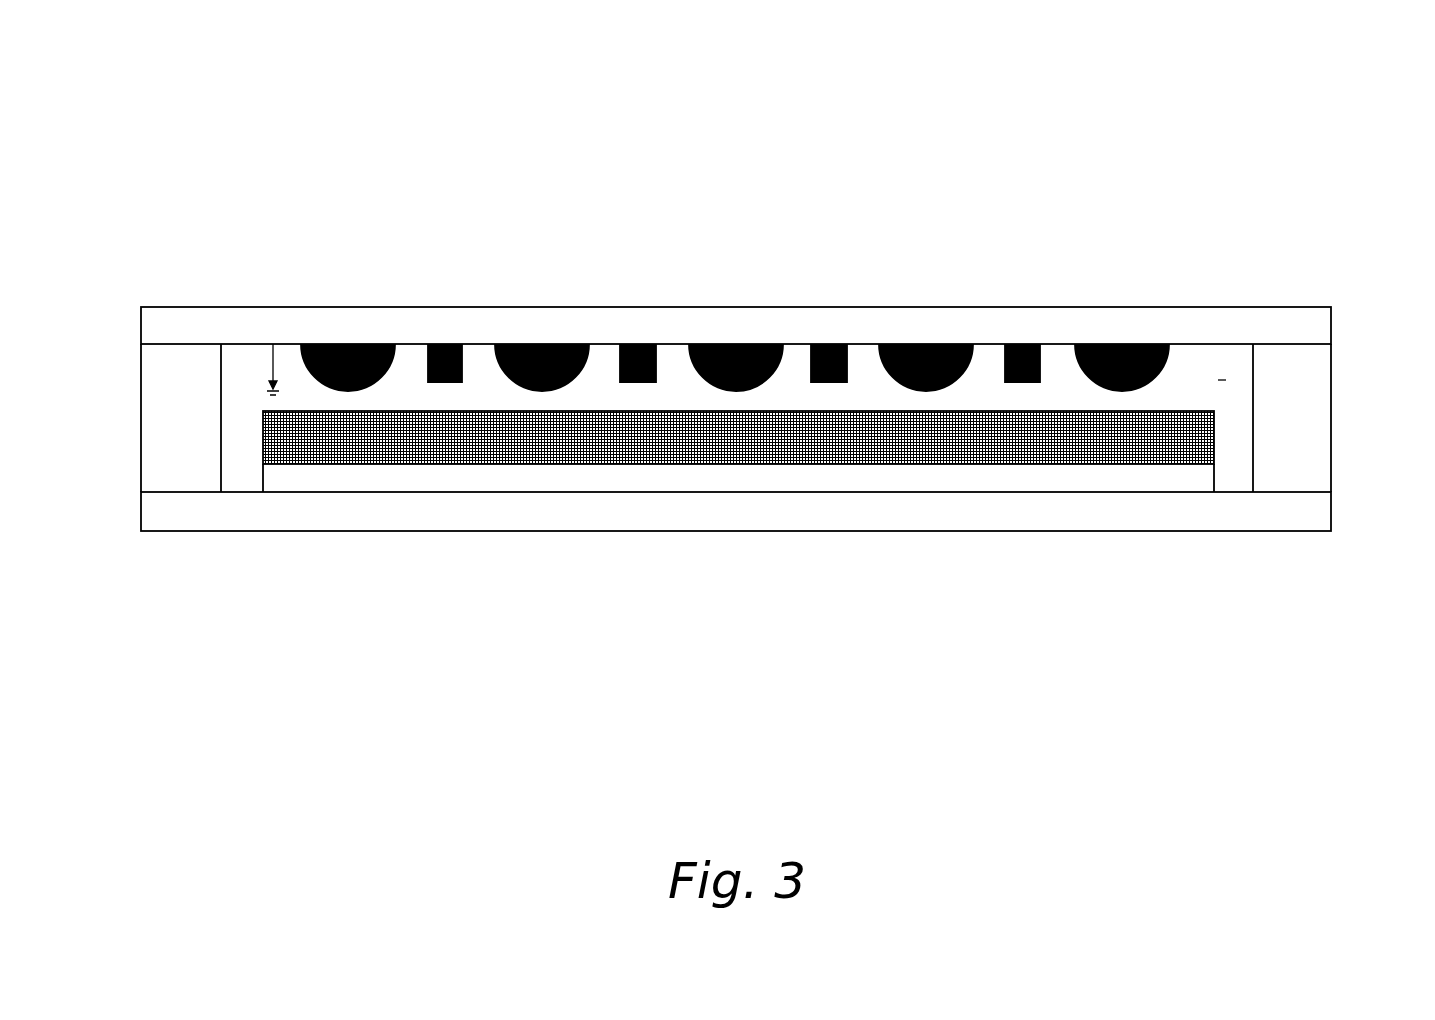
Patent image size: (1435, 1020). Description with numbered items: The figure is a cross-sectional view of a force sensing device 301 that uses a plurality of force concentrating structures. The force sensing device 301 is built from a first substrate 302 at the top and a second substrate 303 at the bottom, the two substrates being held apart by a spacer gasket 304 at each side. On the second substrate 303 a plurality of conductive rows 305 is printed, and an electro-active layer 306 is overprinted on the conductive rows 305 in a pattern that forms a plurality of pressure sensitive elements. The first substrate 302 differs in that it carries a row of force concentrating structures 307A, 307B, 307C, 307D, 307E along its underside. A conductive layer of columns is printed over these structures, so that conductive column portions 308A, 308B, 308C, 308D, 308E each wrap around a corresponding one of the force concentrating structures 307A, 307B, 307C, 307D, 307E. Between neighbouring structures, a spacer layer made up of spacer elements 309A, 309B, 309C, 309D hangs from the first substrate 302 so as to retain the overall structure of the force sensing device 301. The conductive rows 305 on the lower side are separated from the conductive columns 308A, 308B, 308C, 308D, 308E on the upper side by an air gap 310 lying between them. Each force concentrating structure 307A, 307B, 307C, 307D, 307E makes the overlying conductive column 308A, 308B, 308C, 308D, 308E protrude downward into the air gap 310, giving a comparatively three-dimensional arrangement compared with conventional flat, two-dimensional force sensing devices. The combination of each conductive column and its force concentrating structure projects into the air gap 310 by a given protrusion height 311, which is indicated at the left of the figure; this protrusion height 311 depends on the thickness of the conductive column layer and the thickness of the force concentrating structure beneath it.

The force sensing device 301 is at (1318, 152).
The first substrate 302 is at (1323, 323).
The second substrate 303 is at (1275, 512).
The spacer gasket 304 is at (141, 415).
The conductive rows 305 is at (907, 480).
The electro-active layer 306 is at (1153, 457).
The force concentrating structure 307A is at (333, 348).
The force concentrating structure 307B is at (525, 348).
The force concentrating structure 307C is at (717, 348).
The force concentrating structure 307D is at (908, 348).
The force concentrating structure 307E is at (1106, 348).
The conductive layer of columns 308A is at (382, 348).
The conductive layer of columns 308B is at (576, 348).
The conductive layer of columns 308C is at (768, 348).
The conductive layer of columns 308D is at (959, 348).
The conductive layer of columns 308E is at (1156, 348).
The spacer element 309A is at (445, 375).
The spacer element 309B is at (638, 375).
The spacer element 309C is at (829, 375).
The spacer element 309D is at (1022, 375).
The air gap 310 is at (1222, 382).
The protrusion height 311 is at (273, 357).